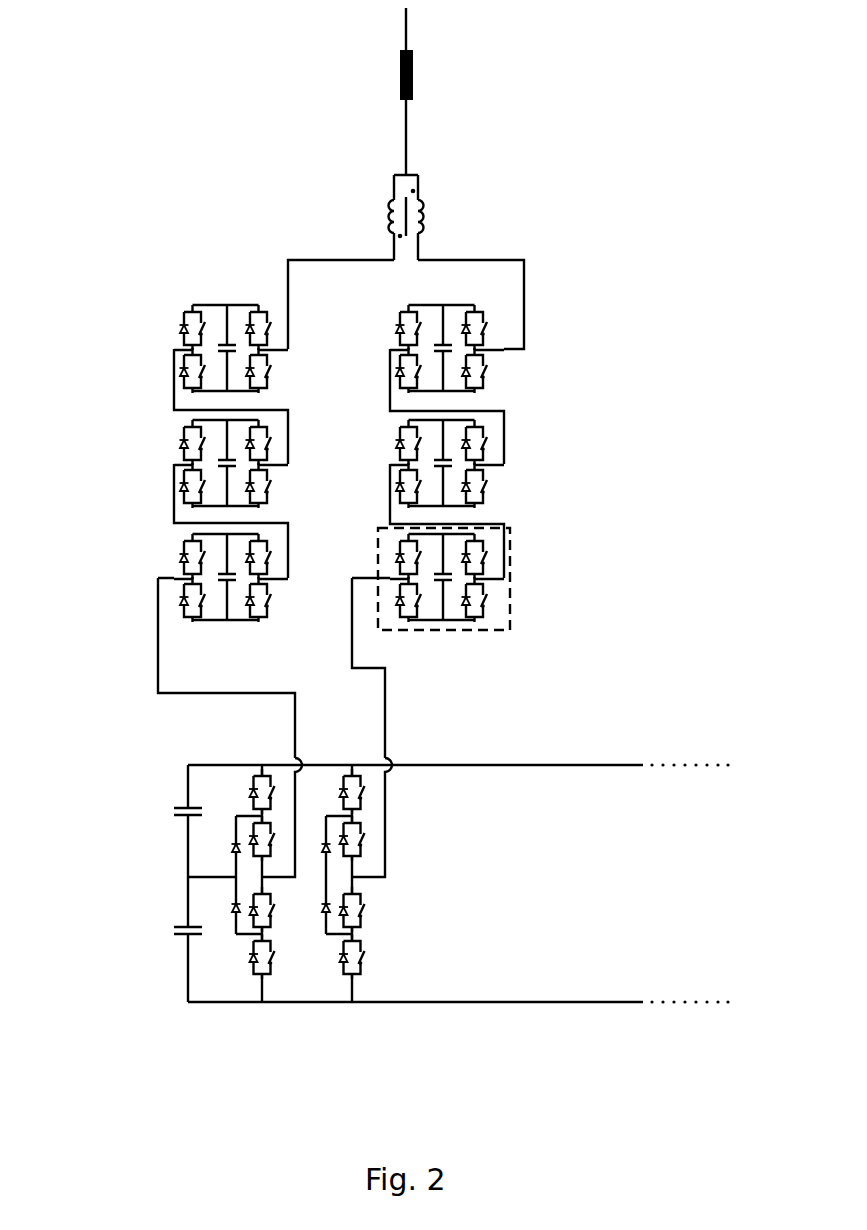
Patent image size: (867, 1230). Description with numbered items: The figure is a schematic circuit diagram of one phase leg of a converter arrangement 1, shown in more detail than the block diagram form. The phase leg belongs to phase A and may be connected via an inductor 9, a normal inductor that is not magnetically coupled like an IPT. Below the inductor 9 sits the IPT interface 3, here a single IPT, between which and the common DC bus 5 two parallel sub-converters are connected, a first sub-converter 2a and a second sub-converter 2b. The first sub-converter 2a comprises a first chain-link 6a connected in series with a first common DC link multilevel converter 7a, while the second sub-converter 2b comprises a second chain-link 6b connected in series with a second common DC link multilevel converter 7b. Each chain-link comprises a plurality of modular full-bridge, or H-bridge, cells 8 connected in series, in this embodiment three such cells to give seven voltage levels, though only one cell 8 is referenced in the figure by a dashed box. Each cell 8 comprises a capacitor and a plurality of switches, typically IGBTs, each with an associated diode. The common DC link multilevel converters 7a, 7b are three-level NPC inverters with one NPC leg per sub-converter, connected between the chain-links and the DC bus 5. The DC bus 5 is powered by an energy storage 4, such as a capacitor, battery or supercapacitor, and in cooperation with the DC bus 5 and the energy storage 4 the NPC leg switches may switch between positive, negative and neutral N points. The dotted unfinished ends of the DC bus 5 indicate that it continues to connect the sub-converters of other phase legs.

The converter arrangement 1 is at (722, 172).
The first sub-converter 2a is at (60, 533).
The second sub-converter 2b is at (645, 483).
The IPT interface 3 is at (414, 184).
The energy storage 4 is at (136, 853).
The common DC bus 5 is at (556, 765).
The first chain-link 6a is at (134, 336).
The second chain-link 6b is at (542, 316).
The first common DC link multilevel converter 7a is at (205, 1020).
The second common DC link multilevel converter 7b is at (412, 875).
The full-bridge cell 8 is at (500, 599).
The inductor 9 is at (400, 76).
The phase A is at (424, 50).
The neutral point N is at (242, 877).